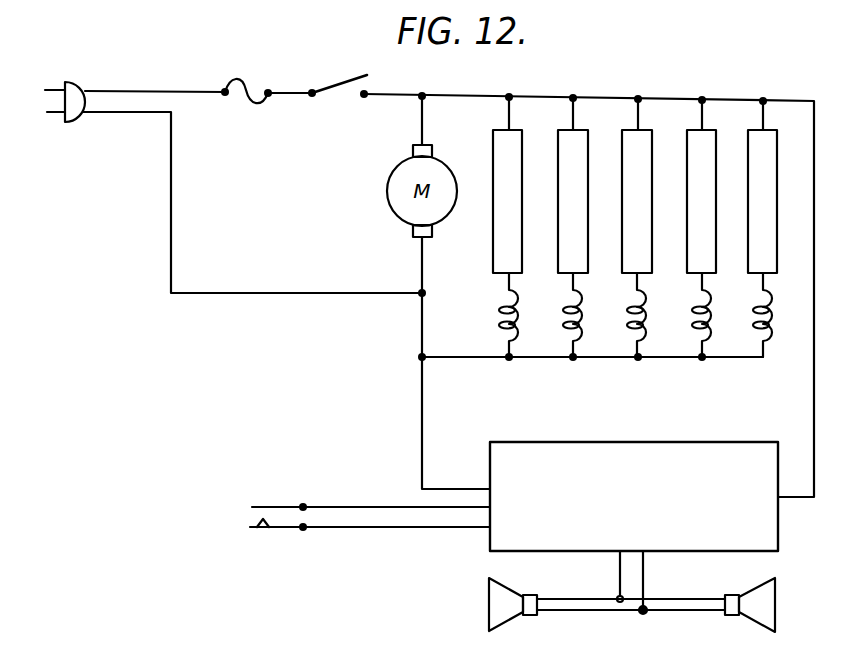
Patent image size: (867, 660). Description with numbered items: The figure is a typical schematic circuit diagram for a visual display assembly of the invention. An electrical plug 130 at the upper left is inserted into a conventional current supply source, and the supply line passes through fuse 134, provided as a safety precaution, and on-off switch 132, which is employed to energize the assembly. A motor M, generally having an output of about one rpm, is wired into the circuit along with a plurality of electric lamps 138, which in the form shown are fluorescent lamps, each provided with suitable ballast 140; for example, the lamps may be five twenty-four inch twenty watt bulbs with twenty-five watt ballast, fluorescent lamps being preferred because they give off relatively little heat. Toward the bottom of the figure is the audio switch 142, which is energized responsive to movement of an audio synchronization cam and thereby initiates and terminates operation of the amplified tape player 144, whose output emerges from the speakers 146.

The electrical plug 130 is at (79, 124).
The on-off switch 132 is at (336, 88).
The fuse 134 is at (247, 102).
The electric lamps 138 is at (558, 137).
The ballast 140 is at (628, 328).
The audio switch 142 is at (277, 527).
The amplified tape player 144 is at (615, 504).
The speakers 146 is at (489, 603).